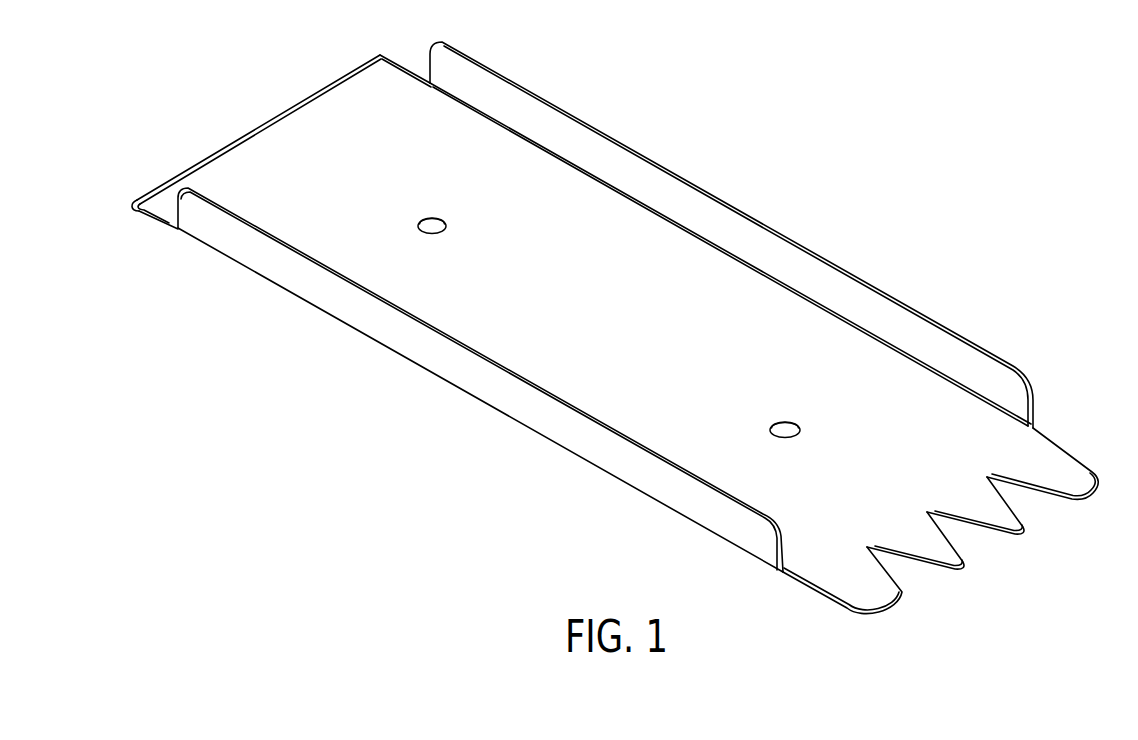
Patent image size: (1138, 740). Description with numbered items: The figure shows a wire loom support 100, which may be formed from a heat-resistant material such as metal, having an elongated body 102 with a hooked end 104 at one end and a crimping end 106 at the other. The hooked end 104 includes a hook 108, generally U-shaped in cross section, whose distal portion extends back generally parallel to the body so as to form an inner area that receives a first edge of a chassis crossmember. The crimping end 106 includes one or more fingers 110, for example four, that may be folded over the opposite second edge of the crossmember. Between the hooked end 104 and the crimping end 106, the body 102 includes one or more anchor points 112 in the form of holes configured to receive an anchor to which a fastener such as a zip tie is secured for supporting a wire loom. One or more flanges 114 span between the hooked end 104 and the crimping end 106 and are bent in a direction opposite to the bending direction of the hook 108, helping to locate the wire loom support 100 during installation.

The wire loom support 100 is at (602, 334).
The body 102 is at (725, 268).
The hooked end 104 is at (242, 139).
The crimping end 106 is at (817, 593).
The hook 108 is at (146, 226).
The fingers 110 is at (1020, 533).
The anchor points 112 is at (785, 424).
The flanges 114 is at (480, 404).